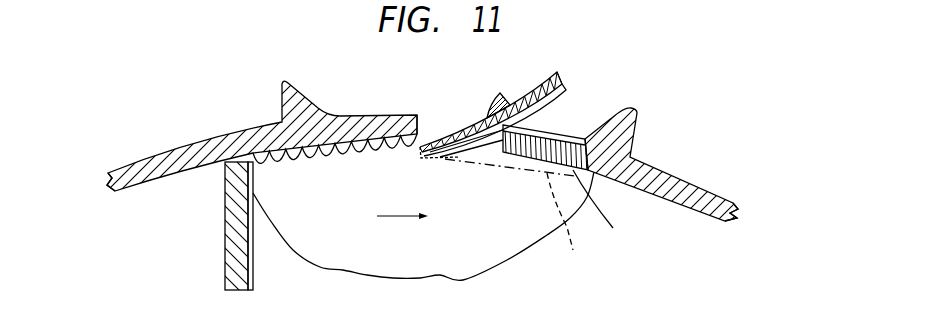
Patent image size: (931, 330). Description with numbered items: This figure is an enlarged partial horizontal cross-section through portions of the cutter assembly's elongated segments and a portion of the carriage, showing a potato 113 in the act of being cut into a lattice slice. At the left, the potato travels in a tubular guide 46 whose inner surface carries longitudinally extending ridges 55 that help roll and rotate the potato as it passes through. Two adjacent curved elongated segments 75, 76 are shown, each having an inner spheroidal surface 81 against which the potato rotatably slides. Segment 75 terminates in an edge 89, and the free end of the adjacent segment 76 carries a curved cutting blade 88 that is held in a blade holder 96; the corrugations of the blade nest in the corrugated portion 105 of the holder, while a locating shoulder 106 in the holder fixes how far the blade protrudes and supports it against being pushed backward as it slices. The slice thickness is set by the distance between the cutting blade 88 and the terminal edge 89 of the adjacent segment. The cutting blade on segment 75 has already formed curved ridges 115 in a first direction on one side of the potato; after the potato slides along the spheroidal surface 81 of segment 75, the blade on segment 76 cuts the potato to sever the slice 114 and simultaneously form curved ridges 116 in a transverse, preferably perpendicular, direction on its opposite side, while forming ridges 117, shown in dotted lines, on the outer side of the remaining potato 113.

The tubular guide 46 is at (225, 258).
The longitudinally extending ridges 55 is at (254, 279).
The curved elongated segment 75 is at (157, 156).
The curved elongated segment 76 is at (706, 190).
The inner spheroidal surface 81 is at (141, 188).
The curved cutting blade 88 is at (432, 162).
The edge 89 is at (420, 117).
The blade holder 96 is at (600, 212).
The corrugated portion 105 is at (463, 157).
The locating shoulder 106 is at (505, 154).
The potato 113 is at (375, 267).
The slice 114 is at (563, 73).
The curved ridges 115 is at (301, 149).
The curved ridges 116 is at (567, 89).
The ridges 117 is at (570, 226).